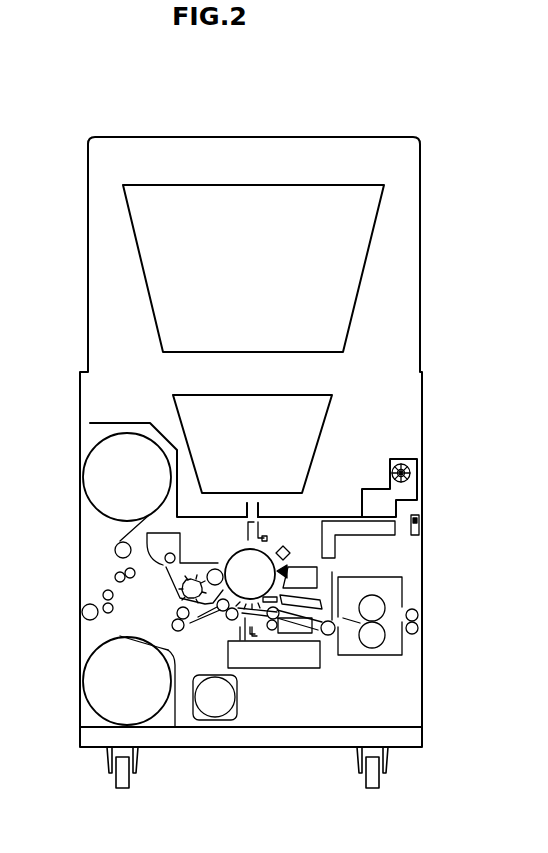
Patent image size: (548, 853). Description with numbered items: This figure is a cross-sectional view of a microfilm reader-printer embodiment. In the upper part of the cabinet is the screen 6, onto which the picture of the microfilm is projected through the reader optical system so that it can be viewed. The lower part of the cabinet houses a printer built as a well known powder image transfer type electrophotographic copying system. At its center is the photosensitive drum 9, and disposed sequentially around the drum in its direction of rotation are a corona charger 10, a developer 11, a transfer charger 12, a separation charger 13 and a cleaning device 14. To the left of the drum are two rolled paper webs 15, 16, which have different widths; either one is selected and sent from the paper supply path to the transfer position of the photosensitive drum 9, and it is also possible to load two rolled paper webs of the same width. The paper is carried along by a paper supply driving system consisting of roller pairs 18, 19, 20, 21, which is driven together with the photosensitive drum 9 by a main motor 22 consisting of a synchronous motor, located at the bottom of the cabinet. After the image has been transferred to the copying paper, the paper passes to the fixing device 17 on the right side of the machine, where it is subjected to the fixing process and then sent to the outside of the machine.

The screen 6 is at (291, 197).
The photosensitive drum 9 is at (238, 558).
The corona charger 10 is at (267, 530).
The developer 11 is at (192, 562).
The transfer charger 12 is at (247, 655).
The separation charger 13 is at (258, 617).
The cleaning device 14 is at (315, 580).
The rolled paper web 15 is at (107, 473).
The rolled paper web 16 is at (93, 683).
The fixing device 17 is at (393, 578).
The roller pair 18 is at (117, 571).
The roller pair 19 is at (103, 594).
The roller pair 20 is at (120, 636).
The roller pair 21 is at (220, 622).
The main motor 22 is at (215, 710).